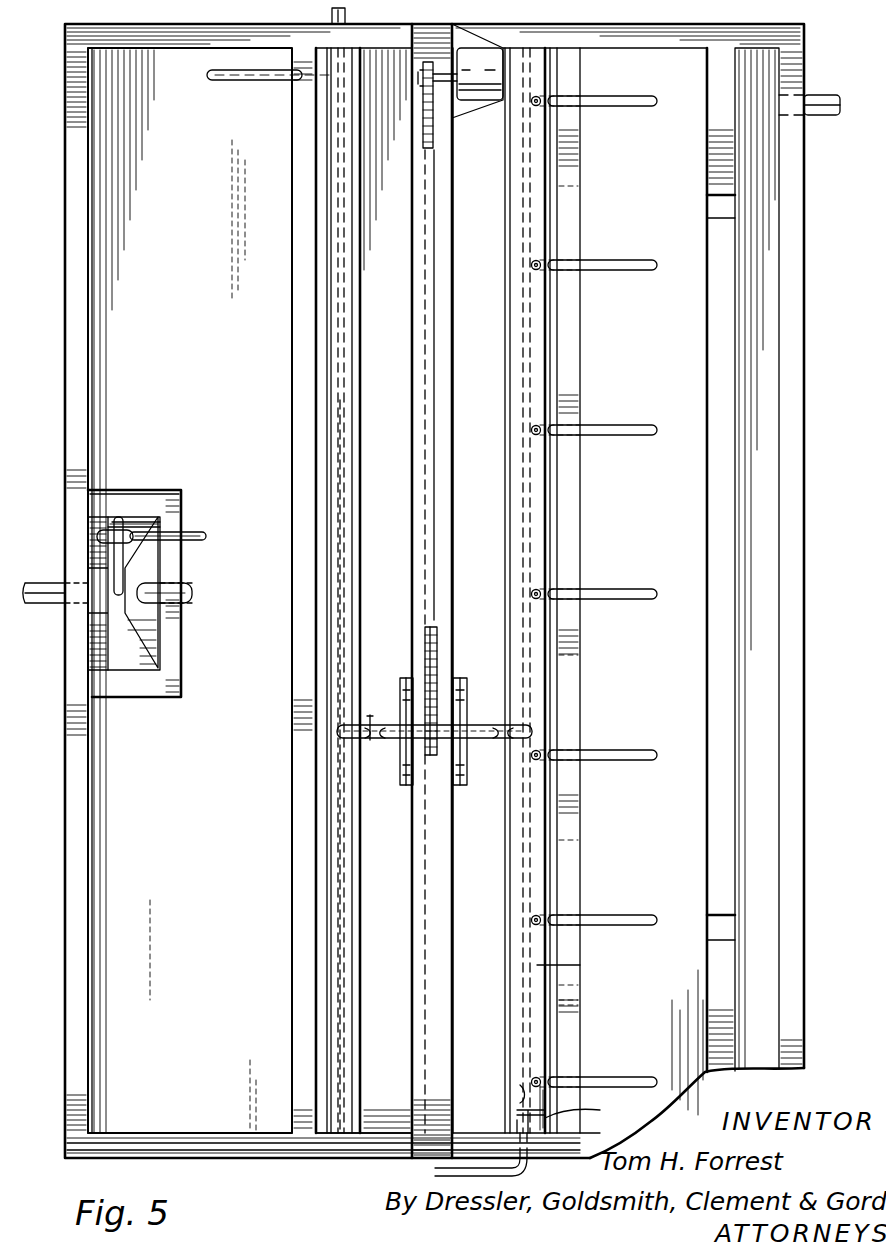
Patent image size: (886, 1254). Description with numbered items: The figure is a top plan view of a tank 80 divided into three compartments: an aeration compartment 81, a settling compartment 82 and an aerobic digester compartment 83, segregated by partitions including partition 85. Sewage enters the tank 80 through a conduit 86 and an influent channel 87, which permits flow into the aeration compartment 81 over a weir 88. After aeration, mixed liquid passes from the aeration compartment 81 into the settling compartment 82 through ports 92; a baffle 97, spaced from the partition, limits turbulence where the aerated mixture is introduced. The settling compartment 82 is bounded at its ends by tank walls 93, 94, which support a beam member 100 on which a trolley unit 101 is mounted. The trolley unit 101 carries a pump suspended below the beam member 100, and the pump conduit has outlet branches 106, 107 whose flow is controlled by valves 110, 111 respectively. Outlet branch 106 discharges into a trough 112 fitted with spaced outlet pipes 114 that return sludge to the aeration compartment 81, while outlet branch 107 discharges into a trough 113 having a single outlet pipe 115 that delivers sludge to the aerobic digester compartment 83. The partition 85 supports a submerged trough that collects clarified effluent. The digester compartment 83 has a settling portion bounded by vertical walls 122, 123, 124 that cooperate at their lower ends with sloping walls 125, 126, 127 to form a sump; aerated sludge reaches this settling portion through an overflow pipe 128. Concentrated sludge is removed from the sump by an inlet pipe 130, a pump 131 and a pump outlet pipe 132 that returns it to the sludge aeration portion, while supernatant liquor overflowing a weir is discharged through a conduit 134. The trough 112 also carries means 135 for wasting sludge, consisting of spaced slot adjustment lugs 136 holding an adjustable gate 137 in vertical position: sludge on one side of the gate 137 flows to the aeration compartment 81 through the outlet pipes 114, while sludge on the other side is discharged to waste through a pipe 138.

The tank 80 is at (575, 886).
The aeration compartment 81 is at (640, 803).
The settling compartment 82 is at (505, 917).
The aerobic digester compartment 83 is at (200, 830).
The partition 85 is at (300, 888).
The conduit 86 is at (822, 97).
The influent channel 87 is at (778, 602).
The weir 88 is at (725, 209).
The ports 92 is at (578, 183).
The tank wall 93 is at (378, 23).
The tank wall 94 is at (355, 1168).
The baffle 97 is at (530, 288).
The beam member 100 is at (430, 198).
The trolley unit 101 is at (478, 690).
The outlet branch 106 is at (490, 740).
The outlet branch 107 is at (392, 738).
The valve 110 is at (510, 720).
The valve 111 is at (375, 715).
The trough 112 is at (537, 965).
The trough 113 is at (340, 925).
The outlet pipes 114 is at (630, 435).
The outlet pipe 115 is at (268, 82).
The vertical wall 122 is at (118, 697).
The vertical wall 123 is at (182, 510).
The vertical wall 124 is at (125, 494).
The sloping wall 125 is at (145, 665).
The sloping wall 126 is at (155, 628).
The sloping wall 127 is at (148, 520).
The overflow pipe 128 is at (190, 605).
The inlet pipe 130 is at (123, 582).
The pump 131 is at (92, 535).
The pump outlet pipe 132 is at (195, 545).
The conduit 134 is at (50, 605).
The means for wasting sludge 135 is at (516, 1094).
The slot adjustment lugs 136 is at (522, 1082).
The adjustable gate 137 is at (548, 1110).
The pipe 138 is at (437, 1172).